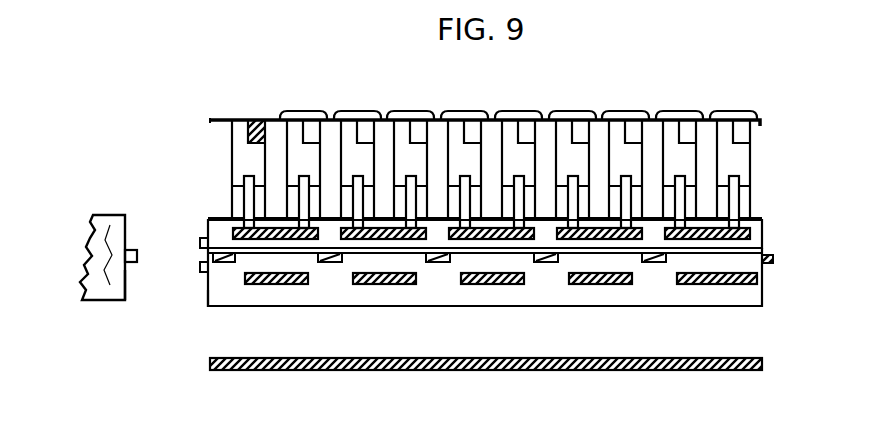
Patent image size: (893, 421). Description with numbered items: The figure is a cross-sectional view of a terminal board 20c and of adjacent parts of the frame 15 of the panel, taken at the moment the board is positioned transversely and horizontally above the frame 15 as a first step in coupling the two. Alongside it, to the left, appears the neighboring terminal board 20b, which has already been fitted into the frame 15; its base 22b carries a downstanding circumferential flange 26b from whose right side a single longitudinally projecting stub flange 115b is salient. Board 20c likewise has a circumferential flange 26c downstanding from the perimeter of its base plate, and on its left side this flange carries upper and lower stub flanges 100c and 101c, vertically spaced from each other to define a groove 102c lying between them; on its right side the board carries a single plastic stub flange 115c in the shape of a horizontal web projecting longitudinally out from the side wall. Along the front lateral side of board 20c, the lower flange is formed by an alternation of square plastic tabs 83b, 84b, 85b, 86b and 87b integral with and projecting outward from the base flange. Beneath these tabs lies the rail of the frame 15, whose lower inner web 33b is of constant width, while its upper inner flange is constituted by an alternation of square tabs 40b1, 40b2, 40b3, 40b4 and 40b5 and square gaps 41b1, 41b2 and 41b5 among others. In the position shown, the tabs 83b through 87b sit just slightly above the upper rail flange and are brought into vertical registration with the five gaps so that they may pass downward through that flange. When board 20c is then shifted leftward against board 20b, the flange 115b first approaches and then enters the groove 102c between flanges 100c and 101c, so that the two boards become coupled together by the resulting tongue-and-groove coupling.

The frame 15 is at (760, 378).
The terminal board 20b is at (100, 301).
The terminal board 20c is at (832, 169).
The base 22b is at (95, 261).
The circumferential flange 26b is at (128, 286).
The circumferential flange 26c is at (763, 238).
The lower inner web 33b is at (760, 367).
The tab 40b1 is at (753, 282).
The tab 40b2 is at (610, 284).
The tab 40b3 is at (492, 284).
The tab 40b4 is at (385, 284).
The tab 40b5 is at (280, 284).
The gap 41b1 is at (746, 306).
The gap 41b2 is at (591, 306).
The gap 41b5 is at (215, 306).
The tab 83b is at (655, 262).
The tab 84b is at (548, 262).
The tab 85b is at (440, 262).
The tab 86b is at (333, 262).
The tab 87b is at (226, 262).
The upper stub flange 100c is at (202, 237).
The lower stub flange 101c is at (200, 272).
The groove 102c is at (200, 250).
The stub flange 115b is at (132, 250).
The stub flange 115c is at (774, 261).